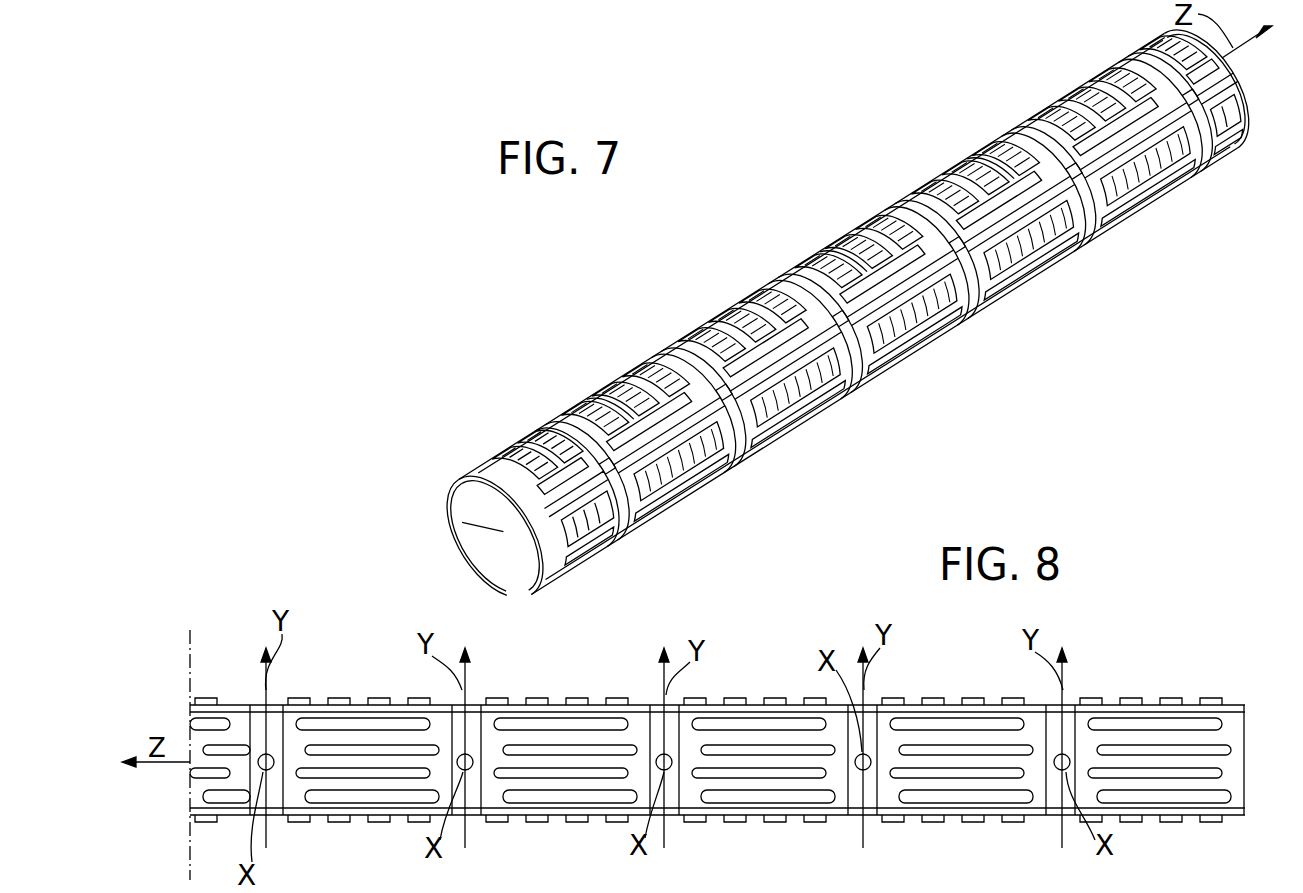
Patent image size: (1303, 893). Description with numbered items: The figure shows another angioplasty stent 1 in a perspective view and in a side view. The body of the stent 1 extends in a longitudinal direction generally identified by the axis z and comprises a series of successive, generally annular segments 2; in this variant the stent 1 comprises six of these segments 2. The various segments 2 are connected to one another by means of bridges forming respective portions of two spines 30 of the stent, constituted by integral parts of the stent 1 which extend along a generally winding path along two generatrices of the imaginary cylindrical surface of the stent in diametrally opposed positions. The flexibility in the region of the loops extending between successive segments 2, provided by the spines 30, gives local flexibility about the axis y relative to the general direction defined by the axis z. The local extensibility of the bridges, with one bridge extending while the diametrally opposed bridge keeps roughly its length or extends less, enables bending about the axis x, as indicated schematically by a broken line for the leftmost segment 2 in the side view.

In FIG. 7, the angioplasty stent 1 is at (723, 280).
In FIG. 8, the angioplasty stent 1 is at (882, 838).
In FIG. 7, the annular segments 2 is at (532, 416).
In FIG. 8, the annular segments 2 is at (343, 850).
In FIG. 7, the spines 30 is at (569, 418).